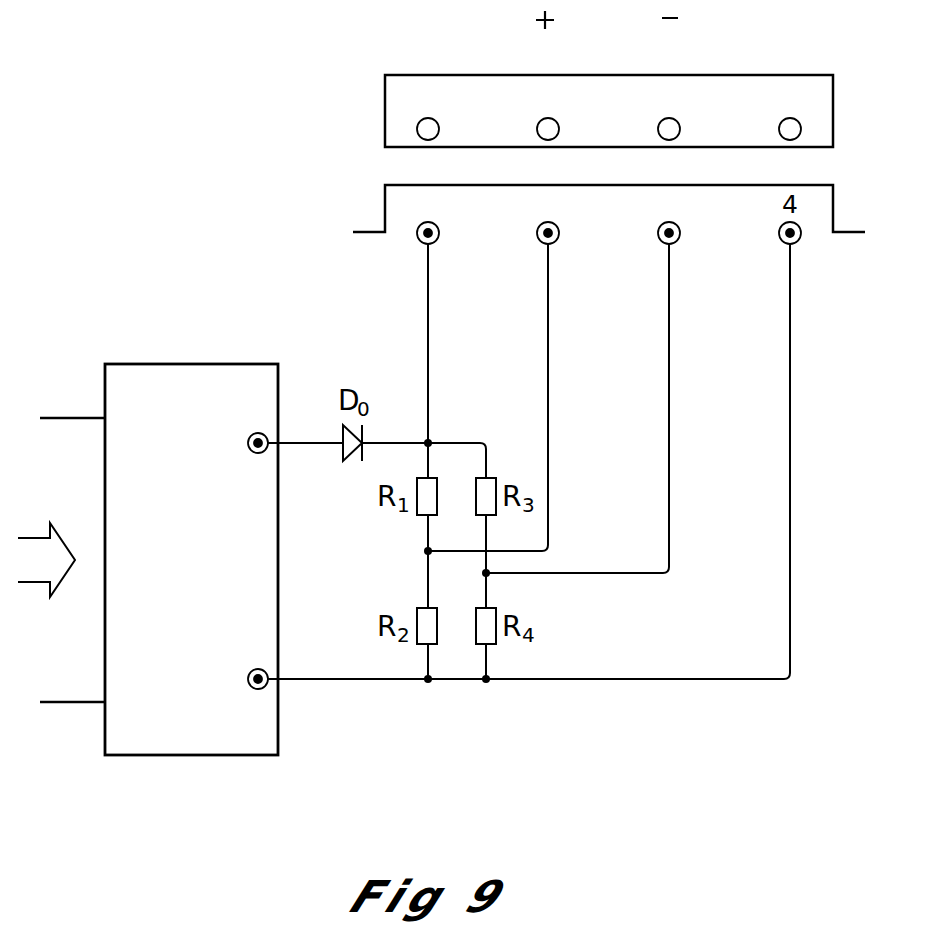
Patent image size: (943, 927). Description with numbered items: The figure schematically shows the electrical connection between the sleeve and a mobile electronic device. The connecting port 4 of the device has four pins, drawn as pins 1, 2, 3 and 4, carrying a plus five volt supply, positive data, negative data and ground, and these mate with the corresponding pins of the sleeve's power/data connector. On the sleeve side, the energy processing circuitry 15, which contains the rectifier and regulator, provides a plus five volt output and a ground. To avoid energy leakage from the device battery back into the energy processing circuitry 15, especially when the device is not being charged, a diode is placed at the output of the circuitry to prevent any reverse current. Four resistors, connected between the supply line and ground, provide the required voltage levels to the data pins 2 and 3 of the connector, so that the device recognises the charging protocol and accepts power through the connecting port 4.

The +5V pin 1 is at (428, 434).
The +DATA pin 2 is at (493, 370).
The -DATA pin 3 is at (583, 381).
The connecting port 4 is at (356, 107).
The energy processing circuitry 15 is at (196, 725).